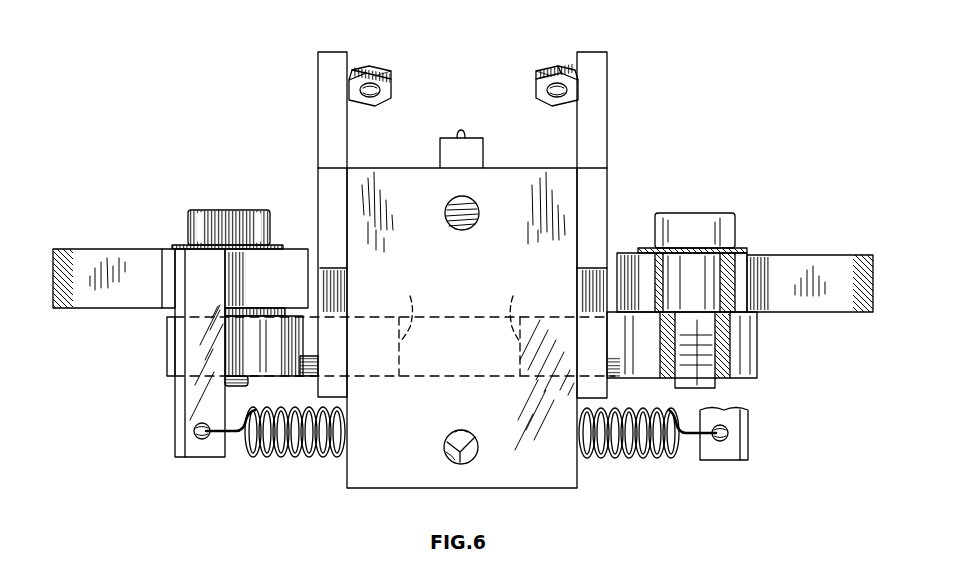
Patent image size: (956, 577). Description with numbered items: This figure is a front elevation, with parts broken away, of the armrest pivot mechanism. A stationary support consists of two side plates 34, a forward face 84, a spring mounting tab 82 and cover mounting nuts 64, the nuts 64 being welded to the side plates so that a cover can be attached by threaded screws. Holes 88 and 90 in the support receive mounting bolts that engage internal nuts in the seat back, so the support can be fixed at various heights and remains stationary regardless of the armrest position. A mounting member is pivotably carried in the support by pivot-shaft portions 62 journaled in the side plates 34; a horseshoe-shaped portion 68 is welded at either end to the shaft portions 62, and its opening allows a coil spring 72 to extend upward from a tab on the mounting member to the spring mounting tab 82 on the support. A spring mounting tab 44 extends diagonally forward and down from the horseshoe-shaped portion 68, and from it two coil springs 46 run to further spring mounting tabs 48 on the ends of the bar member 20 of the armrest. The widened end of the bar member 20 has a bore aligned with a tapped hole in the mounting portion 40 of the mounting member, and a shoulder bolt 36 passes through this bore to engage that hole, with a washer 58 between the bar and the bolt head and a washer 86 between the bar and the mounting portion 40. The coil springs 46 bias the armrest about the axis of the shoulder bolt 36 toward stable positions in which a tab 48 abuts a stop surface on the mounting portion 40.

The bar member 20 is at (97, 260).
The side plates 34 is at (320, 118).
The shoulder bolt 36 is at (188, 222).
The mounting portion 40 is at (267, 365).
The spring mounting tab 44 is at (472, 465).
The coil spring 46 is at (283, 459).
The spring mounting tab 48 is at (177, 399).
The washer 58 is at (172, 247).
The pivot-shaft portion 62 is at (457, 325).
The cover mounting nuts 64 is at (378, 66).
The horseshoe-shaped portion 68 is at (448, 378).
The coil spring 72 is at (462, 230).
The spring mounting tab 82 is at (440, 148).
The forward face 84 is at (476, 291).
The washer 86 is at (258, 309).
The hole 88 is at (470, 200).
The hole 90 is at (449, 458).